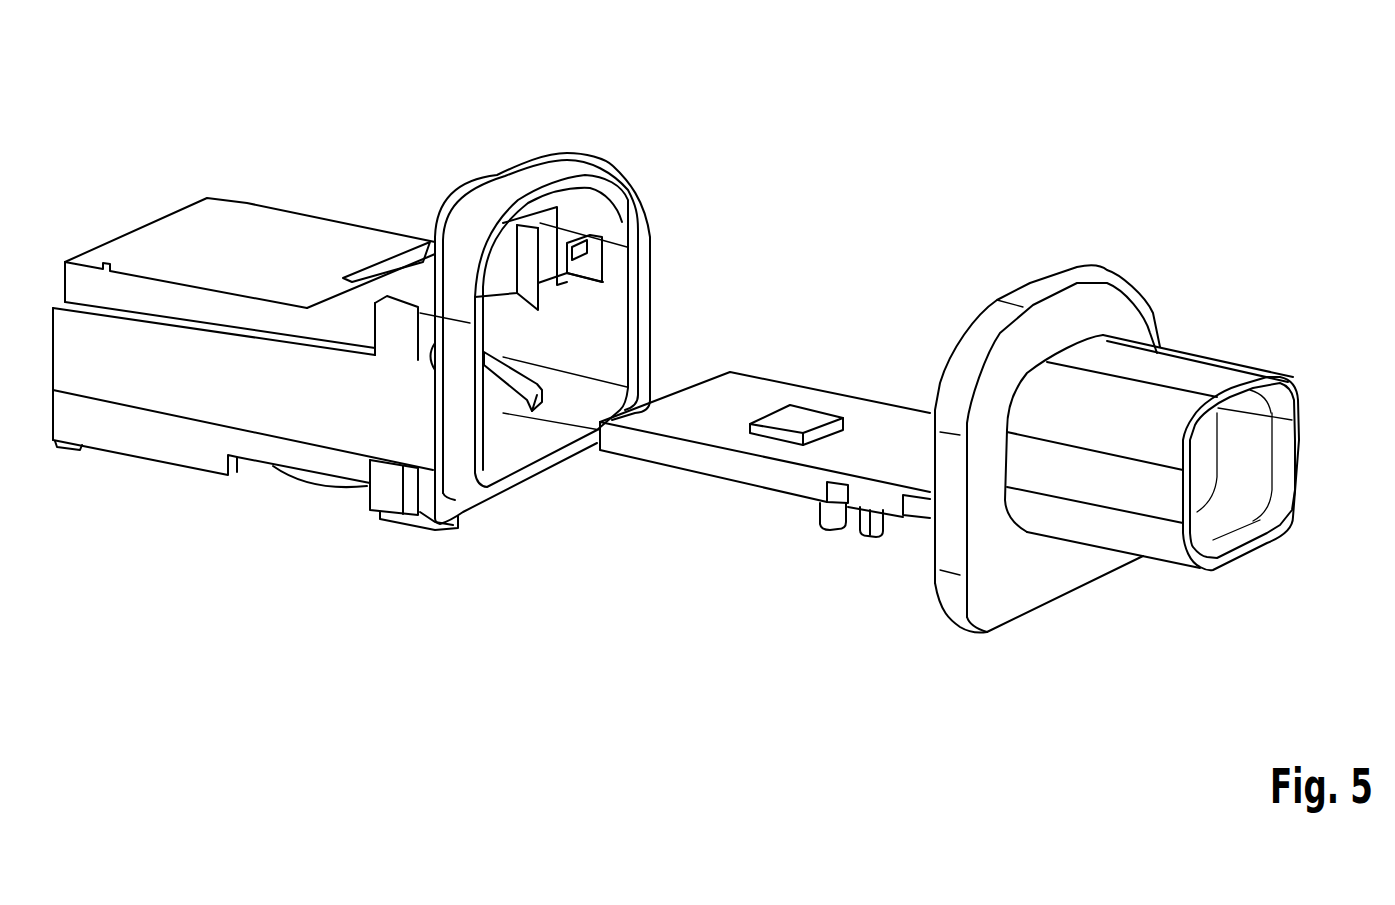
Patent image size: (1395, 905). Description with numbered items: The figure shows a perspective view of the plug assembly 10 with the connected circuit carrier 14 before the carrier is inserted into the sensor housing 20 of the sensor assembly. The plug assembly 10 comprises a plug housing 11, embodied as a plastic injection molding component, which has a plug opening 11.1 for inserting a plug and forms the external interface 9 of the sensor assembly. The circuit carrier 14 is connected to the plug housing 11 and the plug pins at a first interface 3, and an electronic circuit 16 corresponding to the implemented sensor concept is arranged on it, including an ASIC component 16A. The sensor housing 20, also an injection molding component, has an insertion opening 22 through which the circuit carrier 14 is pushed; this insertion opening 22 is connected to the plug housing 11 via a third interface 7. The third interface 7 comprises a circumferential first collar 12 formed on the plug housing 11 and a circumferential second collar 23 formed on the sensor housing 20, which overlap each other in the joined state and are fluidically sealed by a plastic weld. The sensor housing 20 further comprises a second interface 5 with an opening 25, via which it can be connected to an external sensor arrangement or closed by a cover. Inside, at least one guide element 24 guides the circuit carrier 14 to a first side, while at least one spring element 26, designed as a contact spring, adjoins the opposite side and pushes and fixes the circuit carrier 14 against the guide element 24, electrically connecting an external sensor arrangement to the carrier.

The first interface 3 is at (912, 338).
The second interface 5 is at (272, 503).
The third interface 7 is at (630, 140).
The external interface 9 is at (1305, 400).
The plug assembly 10 is at (1245, 277).
The plug housing 11 is at (1196, 430).
The plug opening 11.1 is at (1280, 440).
The first collar 12 is at (1020, 293).
The circuit carrier 14 is at (765, 438).
The electronic circuit 16 is at (704, 350).
The ASIC component 16A is at (810, 413).
The sensor housing 20 is at (302, 152).
The insertion opening 22 is at (640, 265).
The second collar 23 is at (461, 467).
The guide element 24 is at (530, 297).
The opening 25 is at (297, 512).
The spring element 26 is at (877, 538).